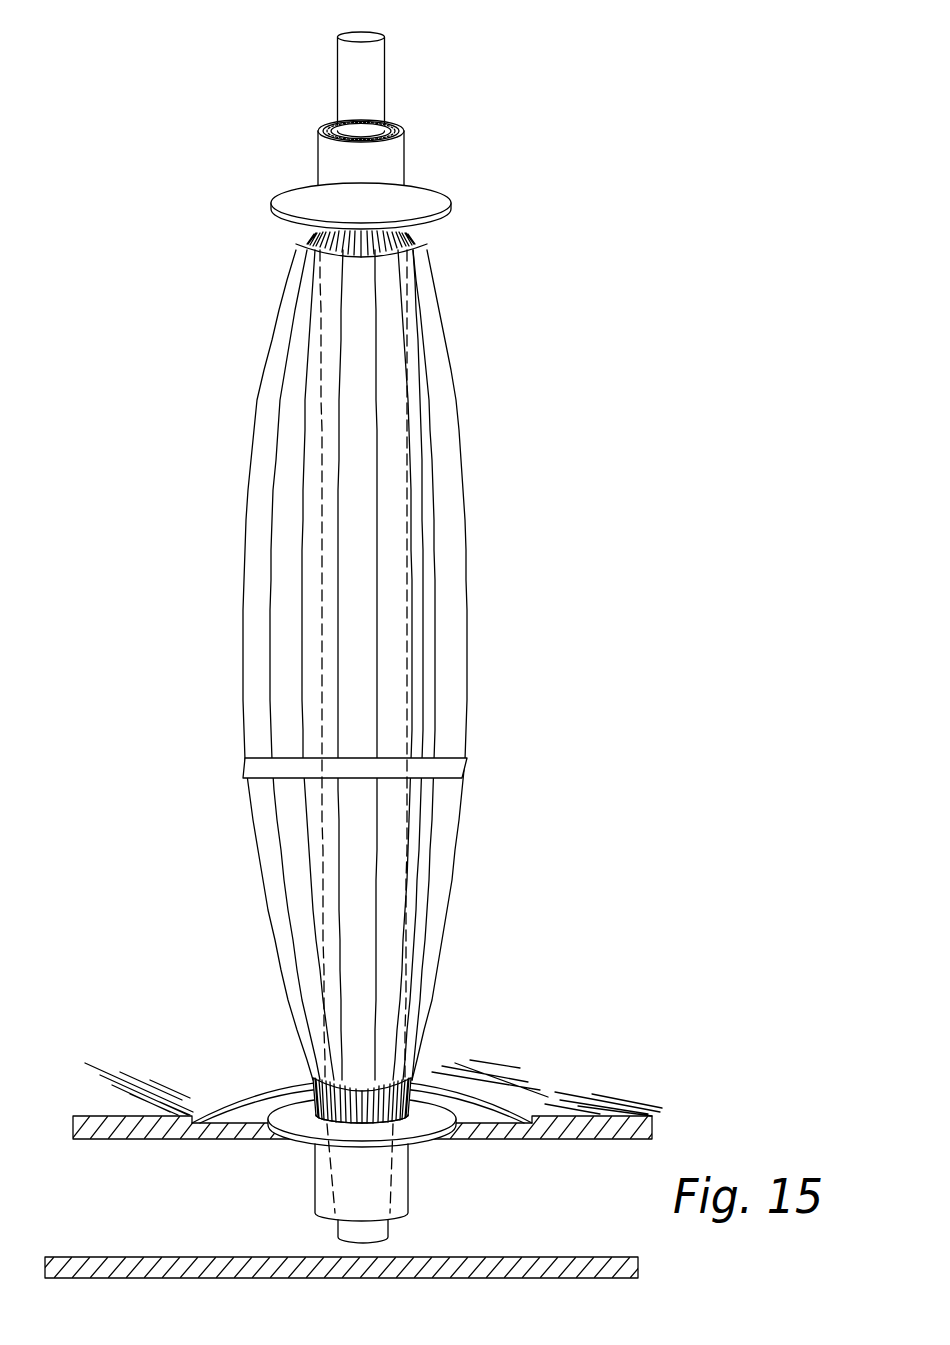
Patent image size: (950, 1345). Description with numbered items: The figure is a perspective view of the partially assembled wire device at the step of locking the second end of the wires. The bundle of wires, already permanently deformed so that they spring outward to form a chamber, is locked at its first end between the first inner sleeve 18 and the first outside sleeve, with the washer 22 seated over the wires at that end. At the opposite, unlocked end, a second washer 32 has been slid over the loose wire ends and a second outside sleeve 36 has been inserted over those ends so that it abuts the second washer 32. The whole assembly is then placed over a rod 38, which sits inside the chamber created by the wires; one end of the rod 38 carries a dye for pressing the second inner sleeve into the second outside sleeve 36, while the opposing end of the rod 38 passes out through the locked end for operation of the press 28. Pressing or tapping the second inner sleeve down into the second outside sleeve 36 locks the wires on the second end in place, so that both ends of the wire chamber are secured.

The first inner sleeve 18 is at (330, 120).
The washer 22 is at (450, 213).
The press 28 is at (573, 1115).
The second washer 32 is at (440, 1107).
The second outside sleeve 36 is at (402, 1180).
The rod 38 is at (370, 82).